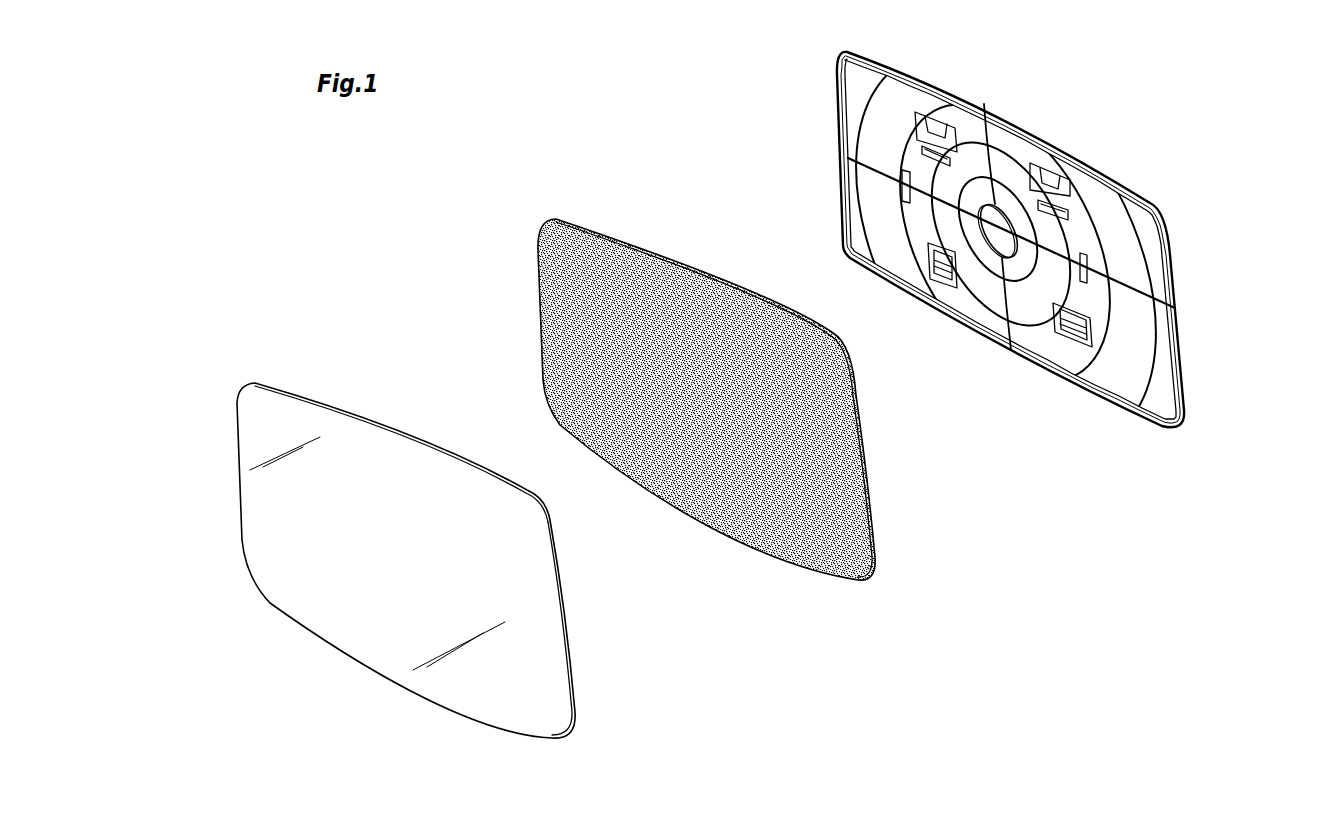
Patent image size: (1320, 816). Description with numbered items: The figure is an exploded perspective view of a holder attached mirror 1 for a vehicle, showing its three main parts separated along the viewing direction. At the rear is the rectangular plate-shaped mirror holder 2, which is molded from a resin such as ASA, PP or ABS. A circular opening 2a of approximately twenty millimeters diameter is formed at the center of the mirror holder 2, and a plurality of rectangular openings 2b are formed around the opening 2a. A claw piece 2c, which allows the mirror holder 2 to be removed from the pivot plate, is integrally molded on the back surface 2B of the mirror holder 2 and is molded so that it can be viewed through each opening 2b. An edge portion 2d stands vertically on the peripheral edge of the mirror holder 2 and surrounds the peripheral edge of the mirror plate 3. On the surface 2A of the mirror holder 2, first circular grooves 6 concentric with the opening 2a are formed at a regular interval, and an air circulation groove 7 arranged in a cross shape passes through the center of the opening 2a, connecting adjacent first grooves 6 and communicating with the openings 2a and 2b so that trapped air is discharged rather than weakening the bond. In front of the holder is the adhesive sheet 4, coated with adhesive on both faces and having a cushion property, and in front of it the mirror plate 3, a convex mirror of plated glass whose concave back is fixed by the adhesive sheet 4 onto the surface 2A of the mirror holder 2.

The holder attached mirror 1 is at (1050, 626).
The mirror holder 2 is at (830, 120).
The surface 2A is at (1140, 340).
The back surface 2B is at (1175, 298).
The opening 2a is at (1003, 224).
The rectangular openings 2b is at (1047, 167).
The claw piece 2c is at (945, 128).
The edge portion 2d is at (988, 106).
The mirror plate 3 is at (229, 431).
The adhesive sheet 4 is at (525, 271).
The first circular grooves 6 is at (1098, 187).
The air circulation groove 7 is at (998, 132).